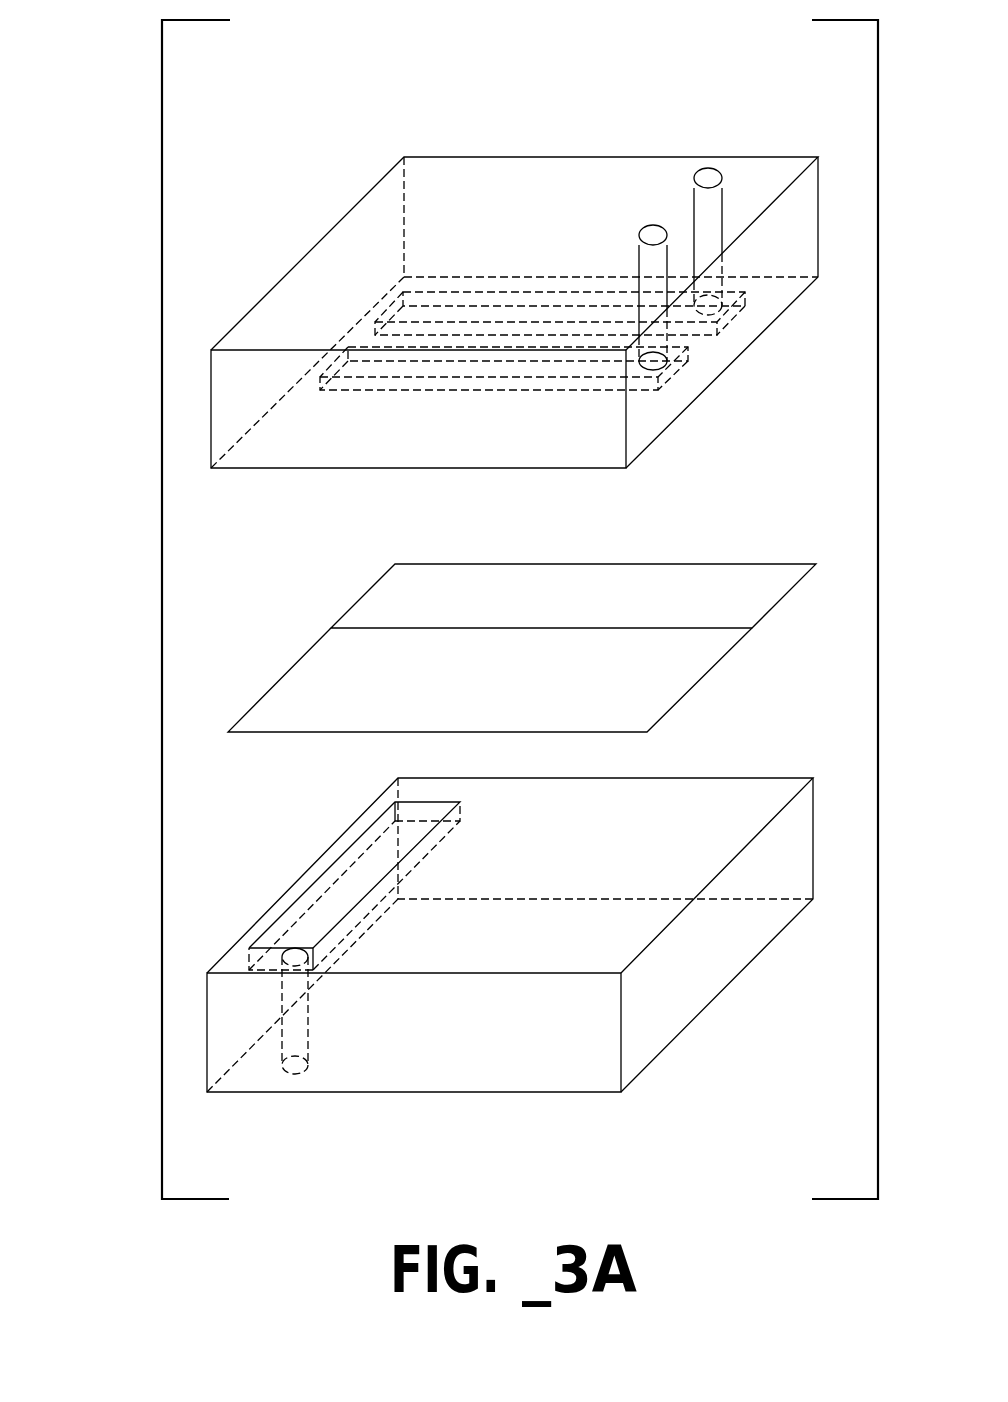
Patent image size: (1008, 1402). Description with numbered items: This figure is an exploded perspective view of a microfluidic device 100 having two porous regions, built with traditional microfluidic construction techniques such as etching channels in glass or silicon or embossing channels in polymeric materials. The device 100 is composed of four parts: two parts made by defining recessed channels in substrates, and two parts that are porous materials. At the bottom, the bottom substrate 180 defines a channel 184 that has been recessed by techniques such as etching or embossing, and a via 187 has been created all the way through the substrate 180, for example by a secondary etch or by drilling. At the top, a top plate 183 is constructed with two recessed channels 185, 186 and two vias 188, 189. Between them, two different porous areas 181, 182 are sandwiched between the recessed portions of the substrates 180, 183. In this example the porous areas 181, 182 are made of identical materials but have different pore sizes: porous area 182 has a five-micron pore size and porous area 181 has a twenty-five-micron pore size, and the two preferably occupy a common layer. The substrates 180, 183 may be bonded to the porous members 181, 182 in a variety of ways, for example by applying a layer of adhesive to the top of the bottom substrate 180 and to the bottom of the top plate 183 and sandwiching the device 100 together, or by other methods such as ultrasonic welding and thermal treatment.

The microfluidic device 100 is at (150, 597).
The bottom substrate 180 is at (651, 1040).
The porous area 181 is at (673, 698).
The porous area 182 is at (745, 608).
The top plate 183 is at (645, 433).
The channel 184 is at (330, 888).
The recessed channel 185 is at (548, 305).
The recessed channel 186 is at (368, 367).
The via 187 is at (293, 1077).
The via 188 is at (706, 168).
The via 189 is at (653, 225).